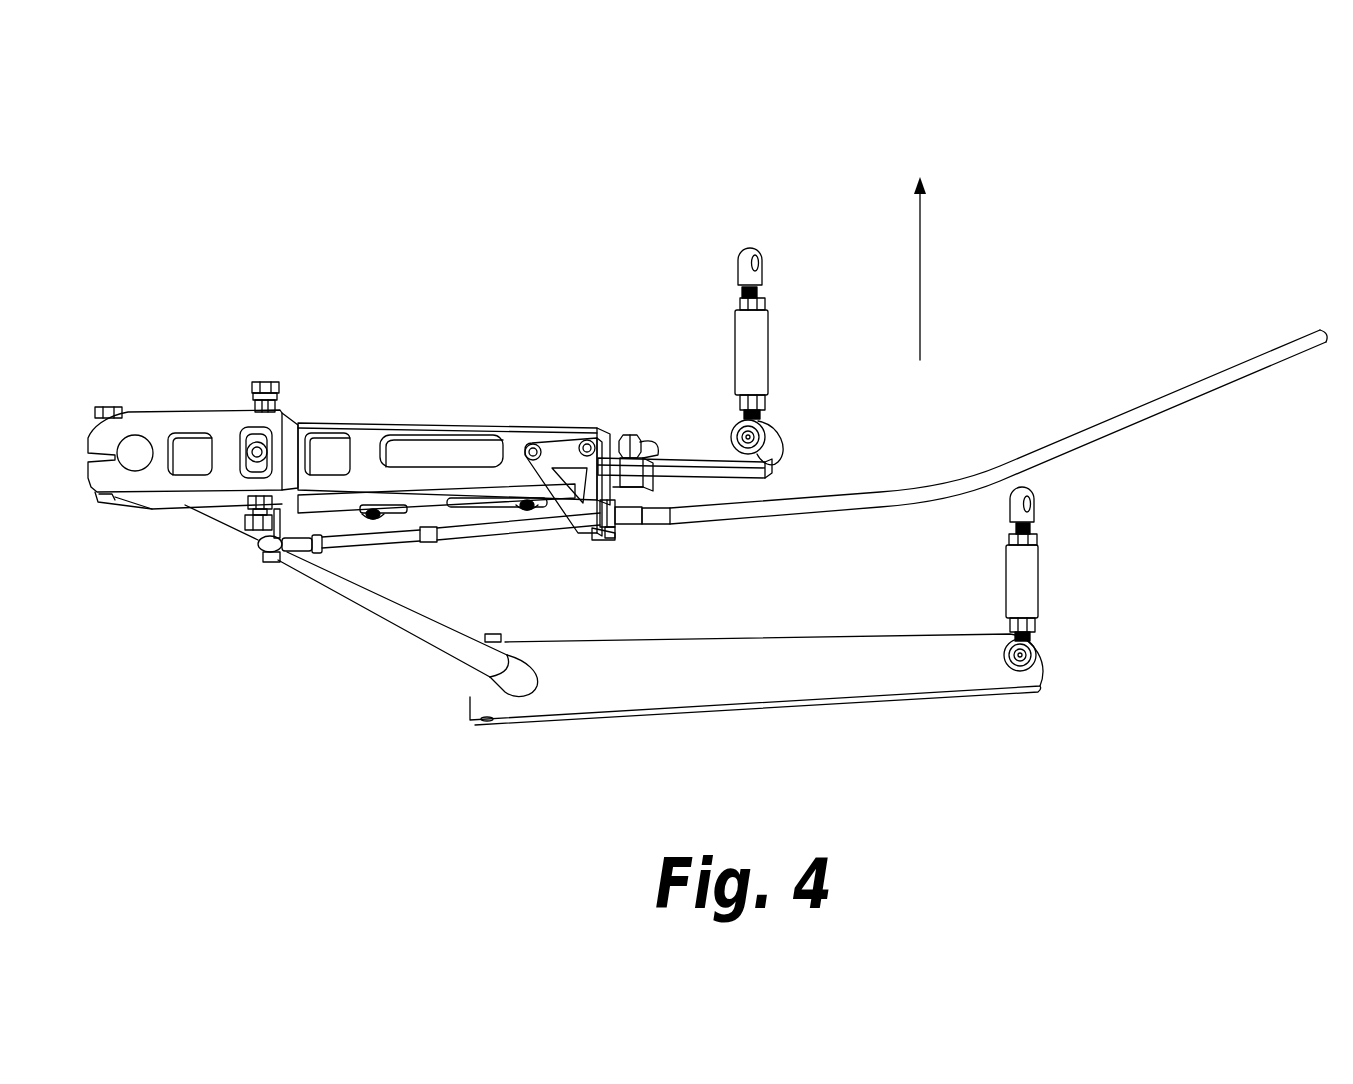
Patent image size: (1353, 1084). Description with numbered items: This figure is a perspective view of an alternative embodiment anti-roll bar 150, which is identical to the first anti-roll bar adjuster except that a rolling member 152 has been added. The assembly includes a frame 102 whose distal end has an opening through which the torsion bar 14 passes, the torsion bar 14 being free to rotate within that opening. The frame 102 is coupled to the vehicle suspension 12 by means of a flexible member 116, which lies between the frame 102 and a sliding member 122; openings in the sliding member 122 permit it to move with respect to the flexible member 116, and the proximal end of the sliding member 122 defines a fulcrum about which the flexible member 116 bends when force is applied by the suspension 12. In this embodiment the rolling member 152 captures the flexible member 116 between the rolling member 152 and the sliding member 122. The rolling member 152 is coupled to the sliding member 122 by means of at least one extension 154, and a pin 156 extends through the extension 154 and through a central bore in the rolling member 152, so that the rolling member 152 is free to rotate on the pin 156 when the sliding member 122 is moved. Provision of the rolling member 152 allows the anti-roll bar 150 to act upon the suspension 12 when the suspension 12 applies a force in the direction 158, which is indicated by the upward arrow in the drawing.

The anti-roll bar 150 is at (381, 224).
The frame 102 is at (375, 410).
The sliding member 122 is at (431, 494).
The extension 154 is at (614, 438).
The rolling member 152 is at (652, 443).
The pin 156 is at (630, 436).
The flexible member 116 is at (728, 466).
The vehicle suspension 12 is at (772, 367).
The torsion bar 14 is at (340, 597).
The direction 158 is at (920, 238).